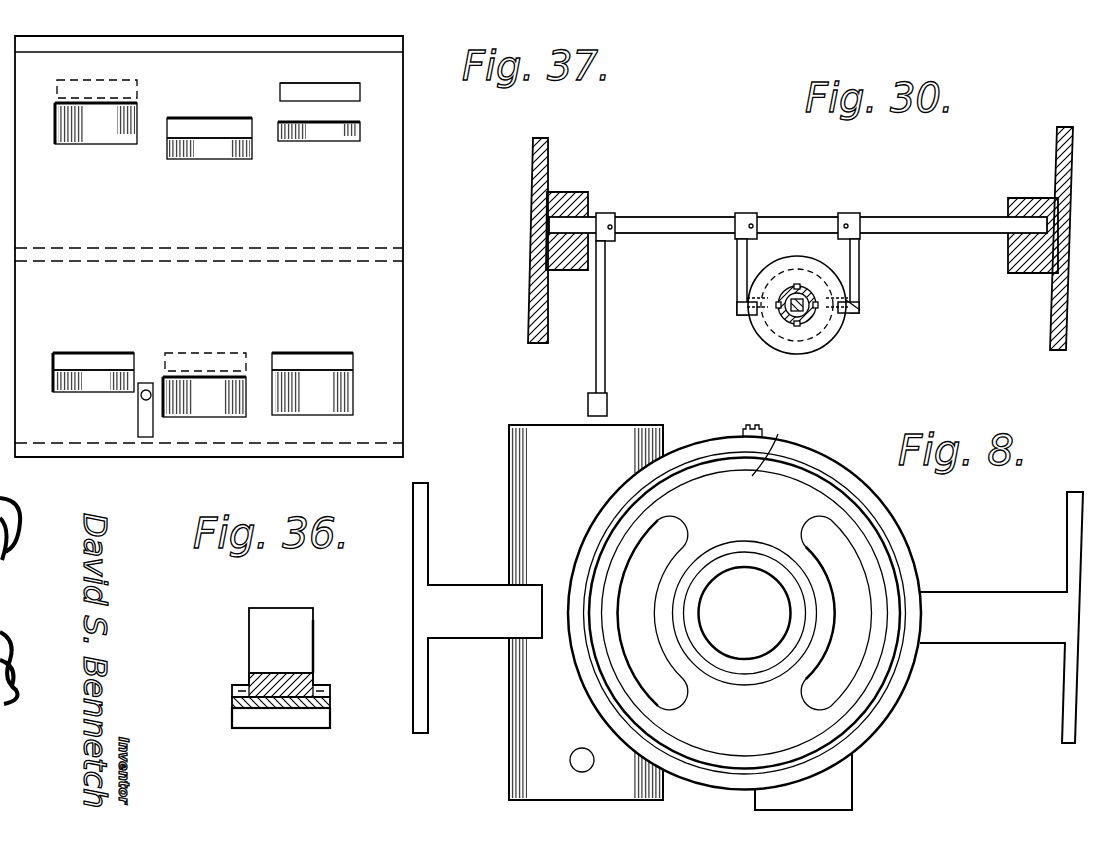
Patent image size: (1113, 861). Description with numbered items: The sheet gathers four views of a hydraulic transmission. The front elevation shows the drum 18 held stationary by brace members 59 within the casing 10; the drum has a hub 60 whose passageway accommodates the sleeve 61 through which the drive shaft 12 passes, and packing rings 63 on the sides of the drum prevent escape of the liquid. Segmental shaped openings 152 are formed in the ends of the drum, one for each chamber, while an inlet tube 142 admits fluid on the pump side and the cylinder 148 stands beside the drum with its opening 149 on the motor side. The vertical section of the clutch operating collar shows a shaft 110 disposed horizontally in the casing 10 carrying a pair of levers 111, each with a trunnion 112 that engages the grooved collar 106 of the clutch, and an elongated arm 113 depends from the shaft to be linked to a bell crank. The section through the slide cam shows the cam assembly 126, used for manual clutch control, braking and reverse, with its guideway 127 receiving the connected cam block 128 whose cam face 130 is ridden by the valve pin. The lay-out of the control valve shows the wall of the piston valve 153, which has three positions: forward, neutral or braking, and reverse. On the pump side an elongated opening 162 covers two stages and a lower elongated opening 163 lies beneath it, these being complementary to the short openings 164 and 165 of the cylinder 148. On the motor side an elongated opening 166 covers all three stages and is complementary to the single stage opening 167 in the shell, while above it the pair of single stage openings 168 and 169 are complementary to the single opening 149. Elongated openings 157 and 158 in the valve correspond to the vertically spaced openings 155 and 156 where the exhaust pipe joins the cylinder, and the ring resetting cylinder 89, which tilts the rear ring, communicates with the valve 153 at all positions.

In FIG. 30, the casing 10 is at (535, 305).
In FIG. 30, the drive shaft 12 is at (812, 312).
In FIG. 8, the drum 18 is at (832, 444).
In FIG. 8, the brace members 59 is at (455, 596).
In FIG. 8, the hub 60 is at (775, 605).
In FIG. 30, the sleeve 61 is at (788, 303).
In FIG. 8, the packing rings 63 is at (746, 474).
In FIG. 37, the ring resetting cylinder 89 is at (142, 397).
In FIG. 30, the grooved collar 106 is at (812, 352).
In FIG. 30, the shaft 110 is at (897, 222).
In FIG. 30, the levers 111 is at (738, 266).
In FIG. 30, the trunnion 112 is at (850, 318).
In FIG. 30, the elongated arm 113 is at (606, 355).
In FIG. 36, the cam assembly 126 is at (302, 660).
In FIG. 36, the guideway 127 is at (330, 706).
In FIG. 36, the block 128 is at (292, 607).
In FIG. 36, the cam face 130 is at (306, 628).
In FIG. 8, the inlet tube 142 is at (838, 786).
In FIG. 8, the cylinder 148 is at (536, 406).
In FIG. 37, the opening 149 is at (355, 85).
In FIG. 8, the segmental shaped openings 152 is at (690, 526).
In FIG. 37, the piston valve 153 is at (400, 226).
In FIG. 37, the opening 155 is at (232, 130).
In FIG. 37, the opening 156 is at (215, 356).
In FIG. 37, the elongated opening 157 is at (208, 105).
In FIG. 37, the elongated opening 158 is at (216, 414).
In FIG. 37, the elongated opening 162 is at (56, 140).
In FIG. 37, the lower elongated opening 163 is at (68, 356).
In FIG. 37, the short opening 164 is at (150, 76).
In FIG. 37, the short opening 165 is at (106, 357).
In FIG. 37, the elongated opening 166 is at (326, 358).
In FIG. 37, the single stage opening 167 is at (288, 360).
In FIG. 37, the single stage opening 168 is at (360, 92).
In FIG. 37, the single stage opening 169 is at (365, 130).